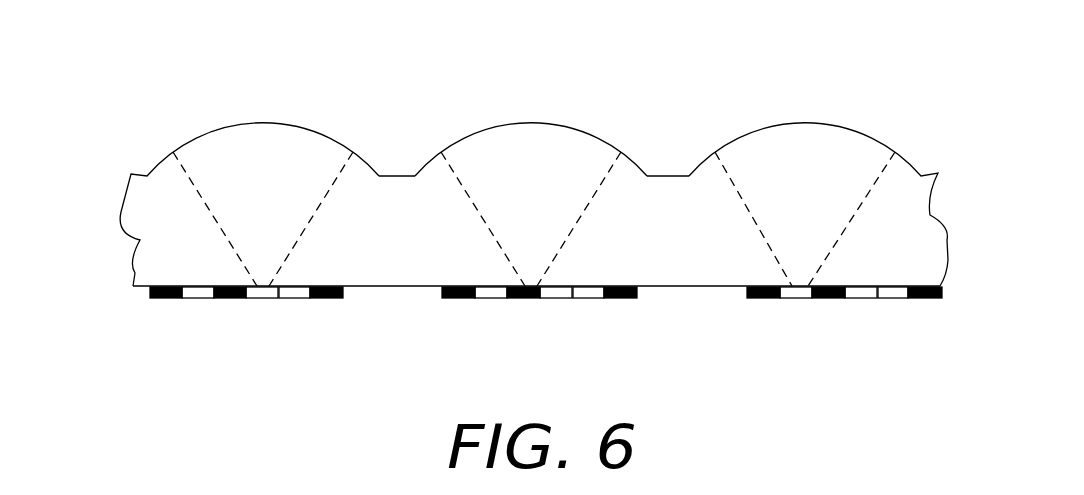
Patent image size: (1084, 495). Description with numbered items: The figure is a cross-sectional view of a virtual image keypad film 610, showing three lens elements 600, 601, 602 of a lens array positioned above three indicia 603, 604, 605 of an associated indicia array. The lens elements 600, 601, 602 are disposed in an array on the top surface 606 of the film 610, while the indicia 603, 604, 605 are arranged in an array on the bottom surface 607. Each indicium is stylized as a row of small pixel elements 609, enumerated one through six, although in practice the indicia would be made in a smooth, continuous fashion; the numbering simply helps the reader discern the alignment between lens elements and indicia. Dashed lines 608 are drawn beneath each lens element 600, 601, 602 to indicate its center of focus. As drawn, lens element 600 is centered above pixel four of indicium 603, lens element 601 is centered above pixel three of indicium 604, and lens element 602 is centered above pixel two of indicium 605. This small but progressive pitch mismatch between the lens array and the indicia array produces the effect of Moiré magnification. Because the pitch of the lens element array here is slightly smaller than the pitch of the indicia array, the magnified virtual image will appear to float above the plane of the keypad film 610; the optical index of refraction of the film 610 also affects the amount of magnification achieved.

The lens element 600 is at (263, 123).
The lens element 601 is at (532, 123).
The lens element 602 is at (805, 123).
The indicium 603 is at (194, 339).
The indicium 604 is at (447, 327).
The indicium 605 is at (748, 327).
The top surface 606 is at (396, 175).
The bottom surface 607 is at (395, 288).
The dashed lines 608 is at (247, 267).
The pixel elements 609 is at (113, 316).
The virtual image keypad film 610 is at (633, 252).